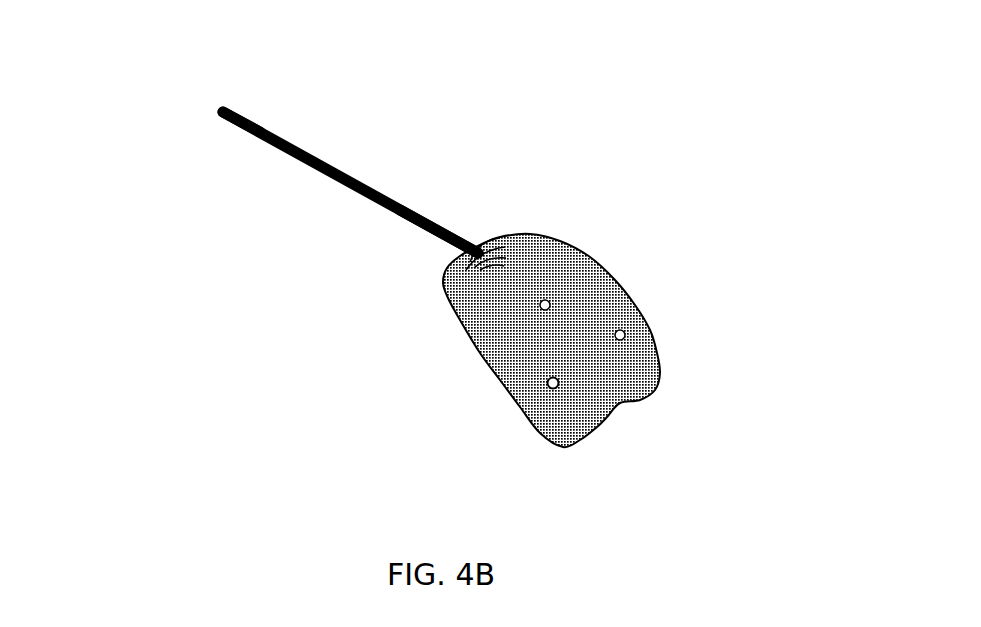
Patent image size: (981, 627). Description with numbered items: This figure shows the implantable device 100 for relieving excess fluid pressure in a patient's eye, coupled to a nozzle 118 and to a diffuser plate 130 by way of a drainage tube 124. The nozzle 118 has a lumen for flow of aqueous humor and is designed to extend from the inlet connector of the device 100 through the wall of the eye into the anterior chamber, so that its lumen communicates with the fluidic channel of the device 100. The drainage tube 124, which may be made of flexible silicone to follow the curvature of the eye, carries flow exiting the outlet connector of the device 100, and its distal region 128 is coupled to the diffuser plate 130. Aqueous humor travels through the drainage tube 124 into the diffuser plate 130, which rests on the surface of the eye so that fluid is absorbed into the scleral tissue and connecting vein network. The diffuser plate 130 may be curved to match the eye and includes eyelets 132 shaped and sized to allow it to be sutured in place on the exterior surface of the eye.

The implantable device 100 is at (333, 175).
The nozzle 118 is at (243, 122).
The drainage tube 124 is at (412, 207).
The distal region 128 is at (480, 247).
The diffuser plate 130 is at (593, 292).
The eyelets 132 is at (553, 383).